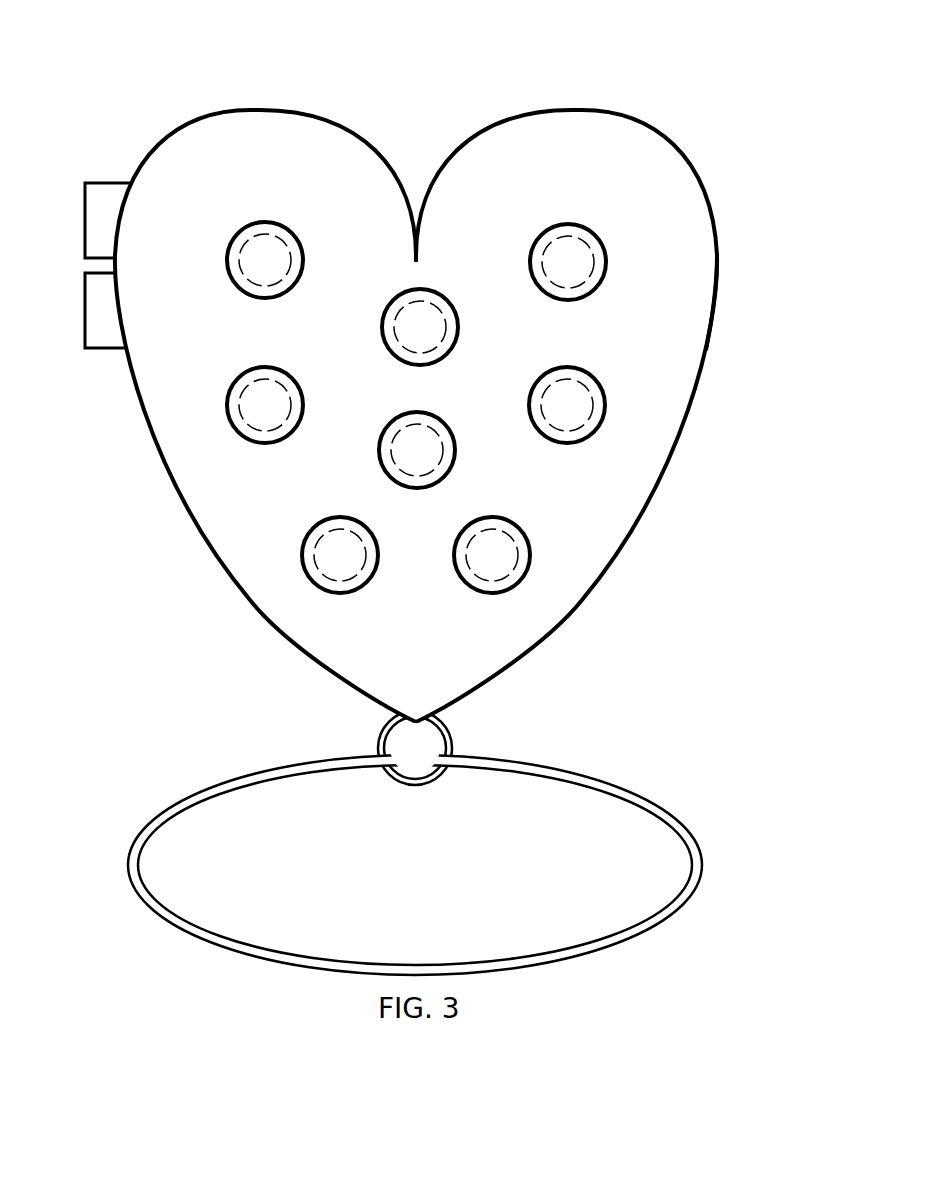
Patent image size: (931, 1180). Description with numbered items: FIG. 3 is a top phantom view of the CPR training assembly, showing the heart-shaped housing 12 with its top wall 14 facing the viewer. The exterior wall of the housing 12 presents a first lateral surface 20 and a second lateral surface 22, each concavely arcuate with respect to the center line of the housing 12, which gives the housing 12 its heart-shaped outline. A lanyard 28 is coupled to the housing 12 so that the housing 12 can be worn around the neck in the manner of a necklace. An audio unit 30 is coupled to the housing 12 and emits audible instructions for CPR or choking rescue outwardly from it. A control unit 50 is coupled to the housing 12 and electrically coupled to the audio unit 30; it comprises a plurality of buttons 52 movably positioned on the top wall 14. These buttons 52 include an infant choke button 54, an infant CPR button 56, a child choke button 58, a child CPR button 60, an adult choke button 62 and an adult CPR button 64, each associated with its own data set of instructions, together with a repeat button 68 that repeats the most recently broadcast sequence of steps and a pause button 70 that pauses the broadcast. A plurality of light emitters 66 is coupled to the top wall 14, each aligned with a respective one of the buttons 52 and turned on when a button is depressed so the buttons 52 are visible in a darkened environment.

The housing 12 is at (690, 410).
The top wall 14 is at (517, 177).
The first lateral surface 20 is at (130, 372).
The second lateral surface 22 is at (713, 325).
The lanyard 28 is at (700, 855).
The audio unit 30 is at (114, 150).
The control unit 50 is at (265, 144).
The buttons 52 is at (457, 453).
The infant choke button 54 is at (286, 238).
The infant CPR button 56 is at (290, 376).
The child choke button 58 is at (310, 582).
The child CPR button 60 is at (492, 593).
The adult choke button 62 is at (605, 408).
The adult CPR button 64 is at (600, 243).
The light emitters 66 is at (243, 278).
The repeat button 68 is at (452, 300).
The pause button 70 is at (421, 490).